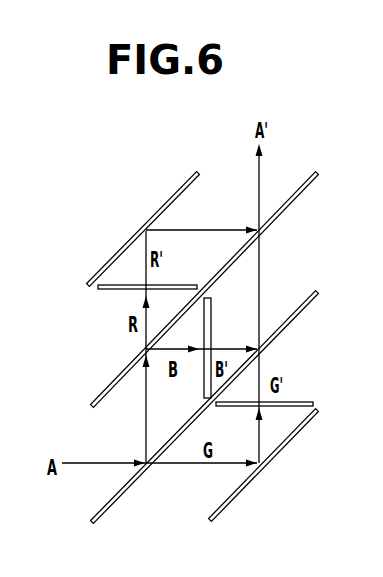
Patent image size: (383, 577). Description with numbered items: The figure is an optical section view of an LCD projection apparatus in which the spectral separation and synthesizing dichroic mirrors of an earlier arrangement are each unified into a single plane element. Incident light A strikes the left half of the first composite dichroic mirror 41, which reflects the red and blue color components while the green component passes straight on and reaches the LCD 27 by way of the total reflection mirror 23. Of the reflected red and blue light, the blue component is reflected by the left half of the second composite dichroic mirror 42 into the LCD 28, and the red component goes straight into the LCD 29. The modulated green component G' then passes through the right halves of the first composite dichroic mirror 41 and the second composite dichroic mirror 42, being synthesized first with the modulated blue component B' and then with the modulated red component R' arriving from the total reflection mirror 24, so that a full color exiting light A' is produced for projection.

The total reflection mirror 23 is at (246, 486).
The total reflection mirror 24 is at (165, 203).
The LCD 27 is at (302, 401).
The LCD 28 is at (212, 313).
The LCD 29 is at (110, 290).
The first composite dichroic mirror 41 is at (131, 486).
The second composite dichroic mirror 42 is at (103, 394).